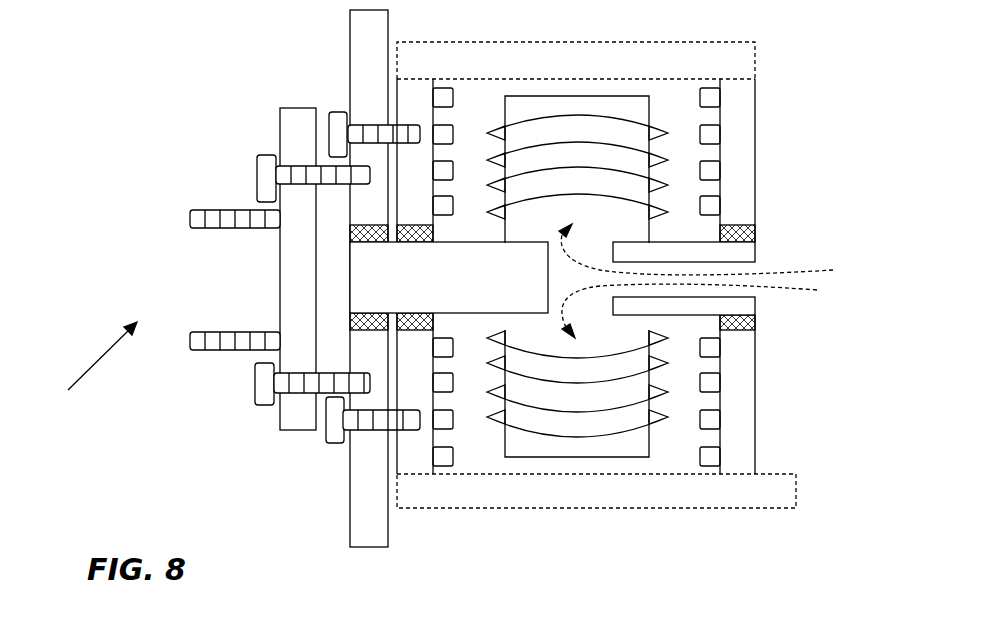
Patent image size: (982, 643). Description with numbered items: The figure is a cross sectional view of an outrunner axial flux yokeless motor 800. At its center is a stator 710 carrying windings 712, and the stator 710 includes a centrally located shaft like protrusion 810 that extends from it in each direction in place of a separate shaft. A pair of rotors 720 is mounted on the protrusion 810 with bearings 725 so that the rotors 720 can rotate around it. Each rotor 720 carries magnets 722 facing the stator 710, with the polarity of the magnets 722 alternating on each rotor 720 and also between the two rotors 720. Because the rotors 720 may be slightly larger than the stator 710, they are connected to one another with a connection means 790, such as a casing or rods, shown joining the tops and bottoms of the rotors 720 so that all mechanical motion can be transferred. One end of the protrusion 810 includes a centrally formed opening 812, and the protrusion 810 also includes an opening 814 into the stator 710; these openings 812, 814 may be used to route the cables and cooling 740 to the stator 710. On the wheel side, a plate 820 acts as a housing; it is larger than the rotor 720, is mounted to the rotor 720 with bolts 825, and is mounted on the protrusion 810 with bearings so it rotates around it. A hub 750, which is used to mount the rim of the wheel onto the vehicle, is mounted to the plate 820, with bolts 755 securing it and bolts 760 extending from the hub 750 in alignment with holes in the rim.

The outrunner axial flux yokeless motor 800 is at (78, 378).
The shaft like protrusion 810 is at (470, 285).
The centrally formed opening 812 is at (757, 258).
The opening into the stator 814 is at (590, 248).
The plate 820 is at (362, 32).
The bolts 825 is at (328, 135).
The hub 750 is at (295, 127).
The bolts 755 is at (257, 180).
The bolts 760 is at (190, 222).
The connection means 790 is at (572, 55).
The rotors 720 is at (745, 135).
The magnets 722 is at (440, 88).
The bearings 725 is at (762, 225).
The cables and cooling 740 is at (778, 288).
The stator 710 is at (636, 443).
The windings 712 is at (487, 420).